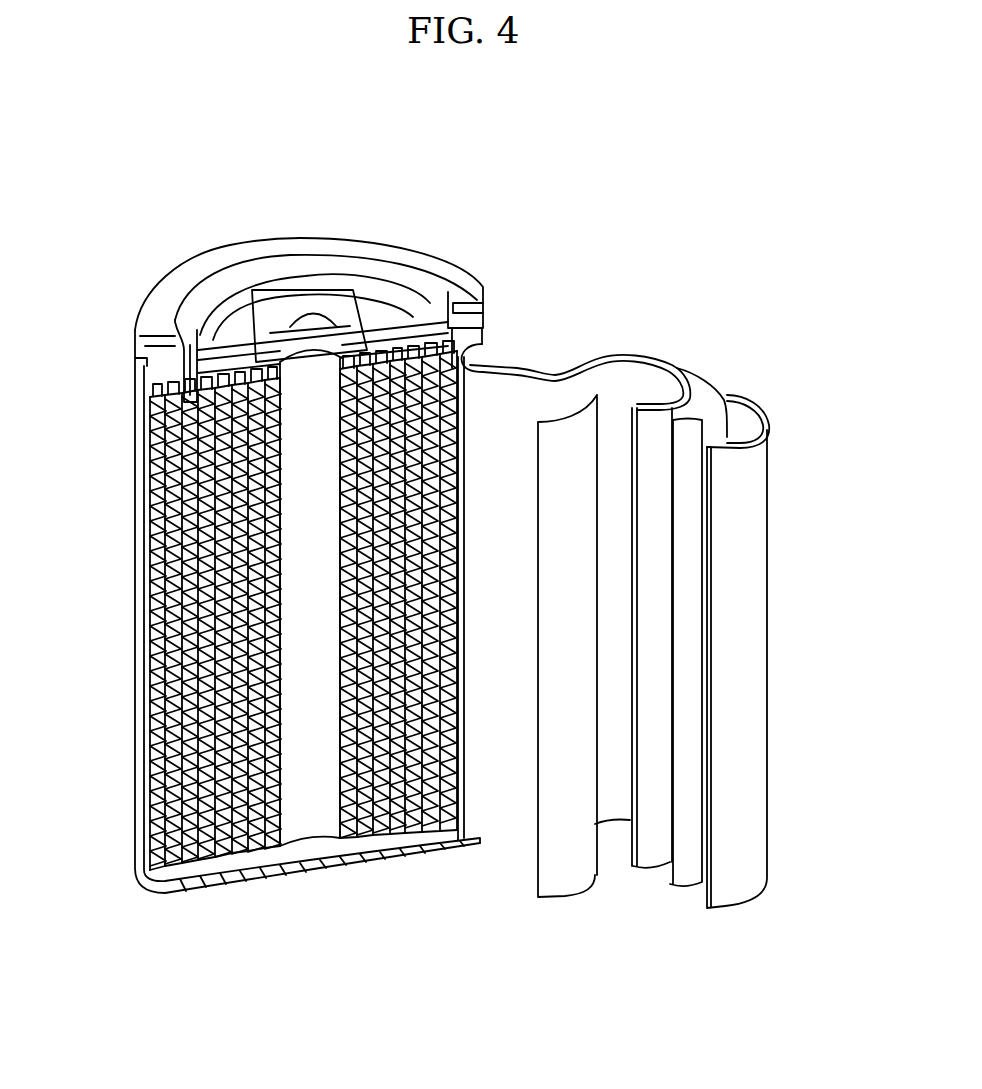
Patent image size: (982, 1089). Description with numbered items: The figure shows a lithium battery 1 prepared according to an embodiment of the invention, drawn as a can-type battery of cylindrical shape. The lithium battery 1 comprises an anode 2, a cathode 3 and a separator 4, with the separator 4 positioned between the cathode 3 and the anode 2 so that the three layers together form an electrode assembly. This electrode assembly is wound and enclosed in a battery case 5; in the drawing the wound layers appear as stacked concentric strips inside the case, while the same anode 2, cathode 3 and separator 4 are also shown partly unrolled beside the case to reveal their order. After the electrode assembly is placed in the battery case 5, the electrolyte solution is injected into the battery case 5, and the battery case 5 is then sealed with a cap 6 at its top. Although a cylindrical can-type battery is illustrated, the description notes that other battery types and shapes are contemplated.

The lithium battery 1 is at (742, 331).
The anode 2 is at (755, 516).
The cathode 3 is at (652, 420).
The separator 4 is at (717, 422).
The battery case 5 is at (133, 817).
The cap 6 is at (327, 272).